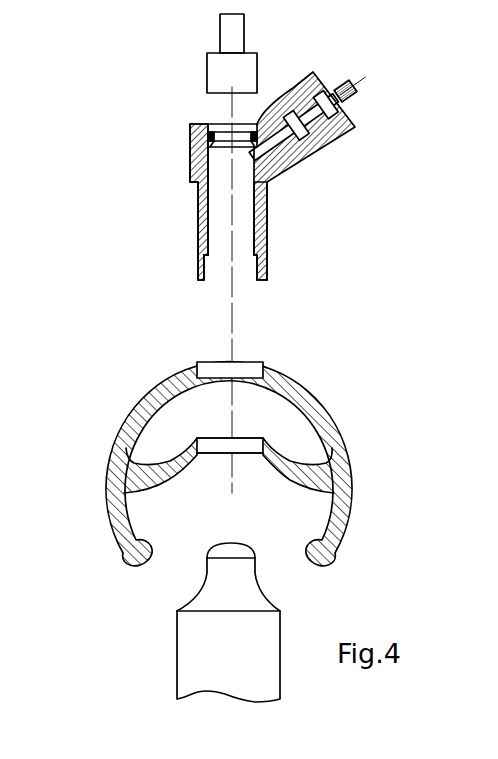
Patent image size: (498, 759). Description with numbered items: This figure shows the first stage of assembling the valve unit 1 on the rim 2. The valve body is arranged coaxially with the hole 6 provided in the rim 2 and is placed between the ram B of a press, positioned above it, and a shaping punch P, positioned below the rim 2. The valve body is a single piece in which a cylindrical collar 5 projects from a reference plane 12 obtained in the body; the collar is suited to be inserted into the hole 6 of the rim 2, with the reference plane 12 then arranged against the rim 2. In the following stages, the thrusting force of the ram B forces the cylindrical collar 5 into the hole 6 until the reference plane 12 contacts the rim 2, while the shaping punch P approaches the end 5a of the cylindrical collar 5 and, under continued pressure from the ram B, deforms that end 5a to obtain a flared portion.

The valve unit 1 is at (136, 137).
The rim 2 is at (256, 445).
The cylindrical collar 5 is at (253, 177).
The end of the cylindrical collar 5a is at (198, 268).
The hole 6 is at (199, 444).
The reference plane 12 is at (195, 182).
The ram B is at (248, 68).
The shaping punch P is at (212, 652).